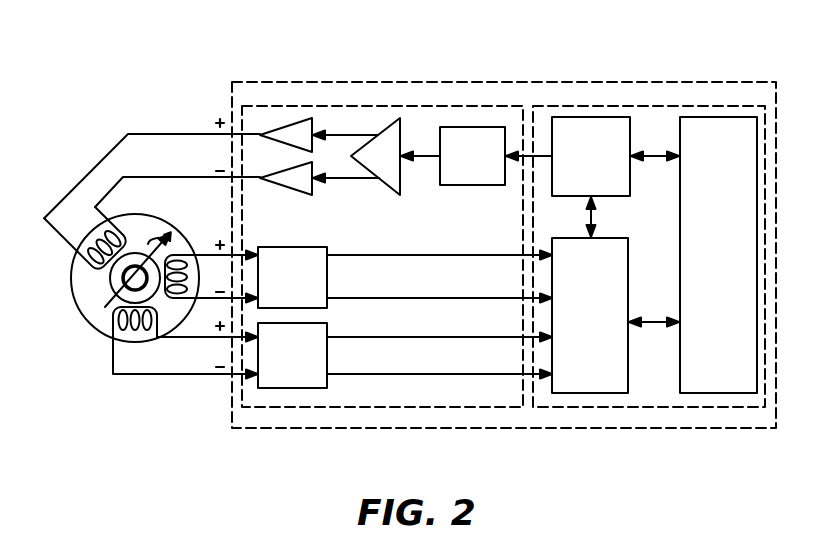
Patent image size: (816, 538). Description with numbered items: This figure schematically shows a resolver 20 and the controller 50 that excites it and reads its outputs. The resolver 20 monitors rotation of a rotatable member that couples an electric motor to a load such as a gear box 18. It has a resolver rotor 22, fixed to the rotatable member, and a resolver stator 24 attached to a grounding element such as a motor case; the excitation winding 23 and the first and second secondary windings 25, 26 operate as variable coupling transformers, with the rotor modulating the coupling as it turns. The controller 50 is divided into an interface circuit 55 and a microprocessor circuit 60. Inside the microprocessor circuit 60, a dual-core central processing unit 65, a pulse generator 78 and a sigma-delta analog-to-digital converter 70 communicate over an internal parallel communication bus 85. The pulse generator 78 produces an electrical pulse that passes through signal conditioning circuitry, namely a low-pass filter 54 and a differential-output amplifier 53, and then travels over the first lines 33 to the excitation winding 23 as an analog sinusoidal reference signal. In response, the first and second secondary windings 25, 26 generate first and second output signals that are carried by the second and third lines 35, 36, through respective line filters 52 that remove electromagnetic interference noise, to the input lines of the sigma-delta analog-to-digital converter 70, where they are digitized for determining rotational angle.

The gear box 18 is at (122, 280).
The resolver 20 is at (74, 328).
The resolver rotor 22 is at (112, 290).
The excitation winding 23 is at (97, 240).
The resolver stator 24 is at (93, 291).
The first secondary winding 25 is at (183, 298).
The second secondary winding 26 is at (133, 330).
The first lines 33 is at (163, 177).
The second lines 35 is at (212, 255).
The third lines 36 is at (161, 340).
The controller 50 is at (311, 69).
The line filters 52 is at (281, 288).
The differential-output amplifier 53 is at (352, 121).
The low-pass filter 54 is at (461, 166).
The interface circuit 55 is at (323, 419).
The microprocessor circuit 60 is at (606, 419).
The dual-core central processing unit 65 is at (707, 263).
The sigma-delta analog-to-digital converter 70 is at (579, 325).
The pulse generator 78 is at (580, 166).
The internal parallel communication bus 85 is at (655, 158).